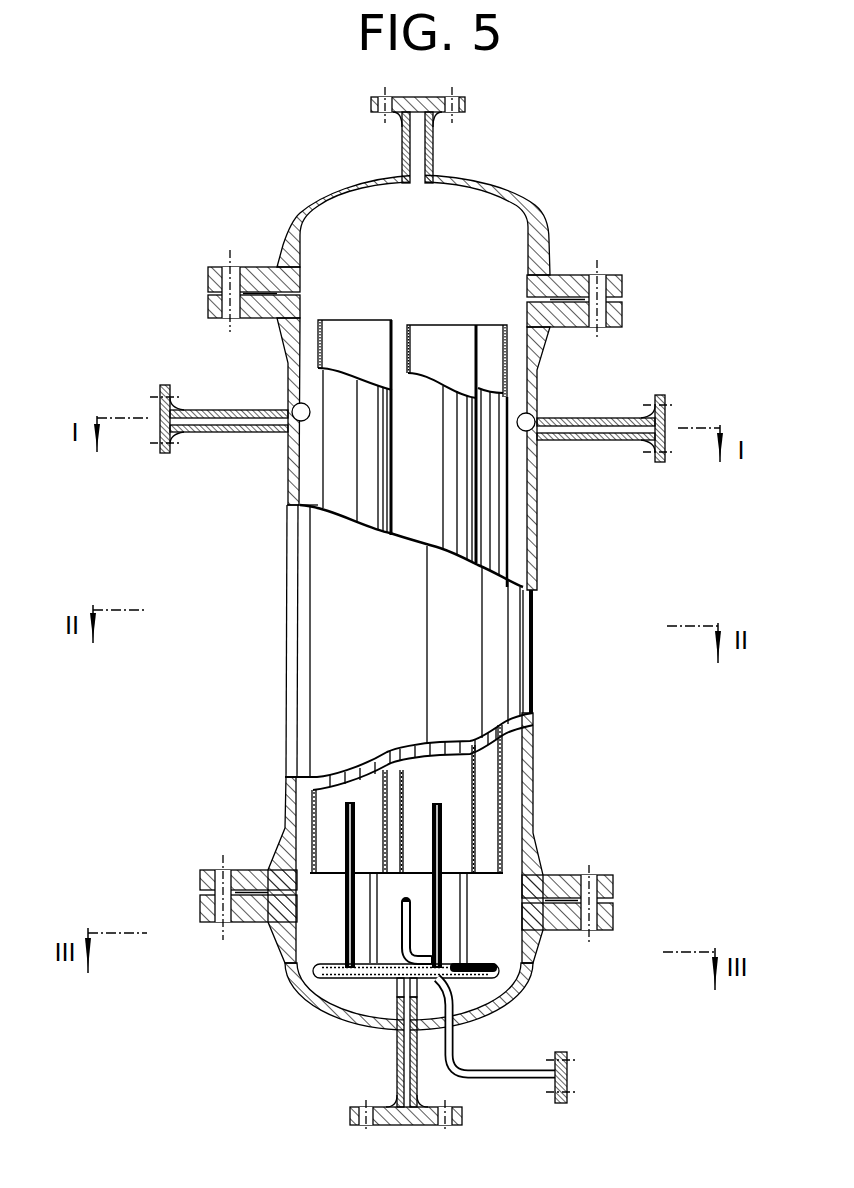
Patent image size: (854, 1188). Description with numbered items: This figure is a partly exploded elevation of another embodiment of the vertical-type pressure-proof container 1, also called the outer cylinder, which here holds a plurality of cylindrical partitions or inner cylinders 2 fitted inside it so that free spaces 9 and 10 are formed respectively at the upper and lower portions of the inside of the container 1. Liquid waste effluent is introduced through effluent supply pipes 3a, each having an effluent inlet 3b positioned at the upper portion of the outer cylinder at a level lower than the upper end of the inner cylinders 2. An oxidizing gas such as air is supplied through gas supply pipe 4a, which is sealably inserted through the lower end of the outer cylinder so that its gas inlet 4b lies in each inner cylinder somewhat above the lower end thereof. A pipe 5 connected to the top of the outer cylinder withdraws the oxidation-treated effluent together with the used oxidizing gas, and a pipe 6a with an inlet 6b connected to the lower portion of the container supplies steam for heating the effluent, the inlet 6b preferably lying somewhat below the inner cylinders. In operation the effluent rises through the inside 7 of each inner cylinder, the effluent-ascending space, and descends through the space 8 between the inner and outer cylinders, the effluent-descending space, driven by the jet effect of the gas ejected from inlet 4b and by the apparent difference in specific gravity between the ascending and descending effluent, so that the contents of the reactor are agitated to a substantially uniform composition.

The vertical-type pressure-proof container 1 is at (535, 473).
The cylindrical partition 2 is at (332, 483).
The pipe 3a is at (218, 418).
The inlet 3b is at (293, 407).
The pipe 4a is at (462, 910).
The inlet 4b is at (437, 803).
The pipe 5 is at (421, 156).
The pipe 6a is at (508, 1075).
The inlet 6b is at (490, 973).
The inside 7 is at (333, 342).
The space 8 is at (293, 460).
The free space 9 is at (457, 210).
The free space 10 is at (503, 932).